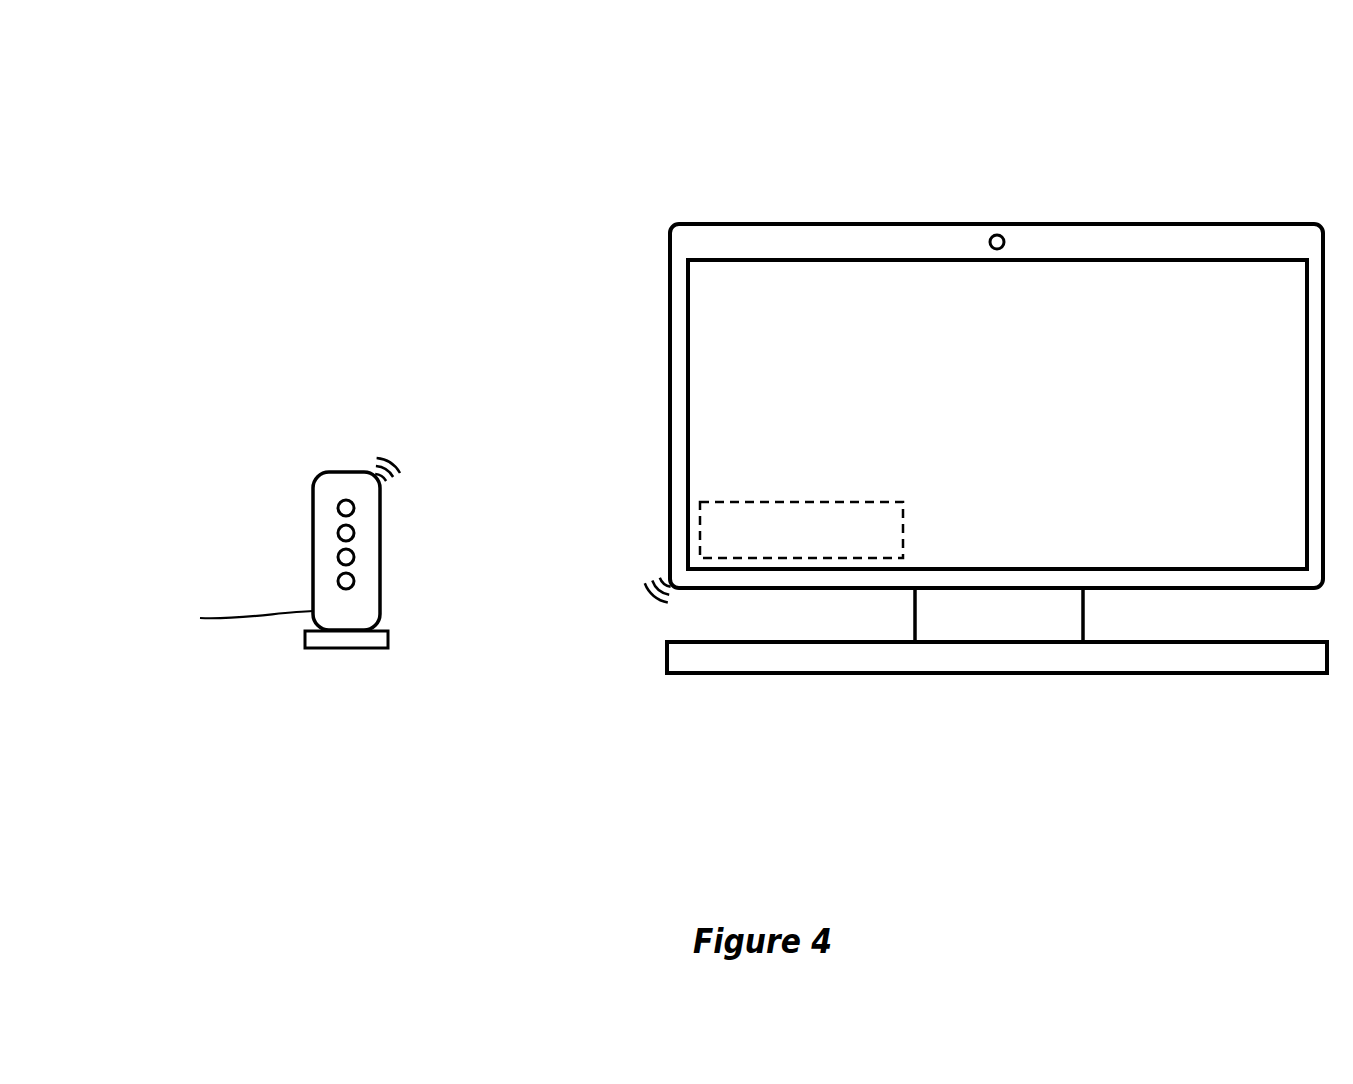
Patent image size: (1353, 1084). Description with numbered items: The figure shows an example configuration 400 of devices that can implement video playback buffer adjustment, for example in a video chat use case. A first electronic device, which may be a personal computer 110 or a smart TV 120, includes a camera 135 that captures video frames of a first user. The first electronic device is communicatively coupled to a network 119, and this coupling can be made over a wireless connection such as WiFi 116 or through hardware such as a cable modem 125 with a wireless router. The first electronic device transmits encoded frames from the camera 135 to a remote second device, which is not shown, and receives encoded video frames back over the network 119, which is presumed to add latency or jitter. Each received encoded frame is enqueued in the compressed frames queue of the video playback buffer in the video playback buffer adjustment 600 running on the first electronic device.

The environment 400 is at (352, 67).
The cable modem 125 is at (344, 523).
The network 119 is at (193, 616).
The WiFi 116 is at (655, 578).
The smart TV 120 is at (997, 428).
The personal computer 110 is at (997, 428).
The camera 135 is at (997, 235).
The video playback buffer adjustment 600 is at (801, 530).